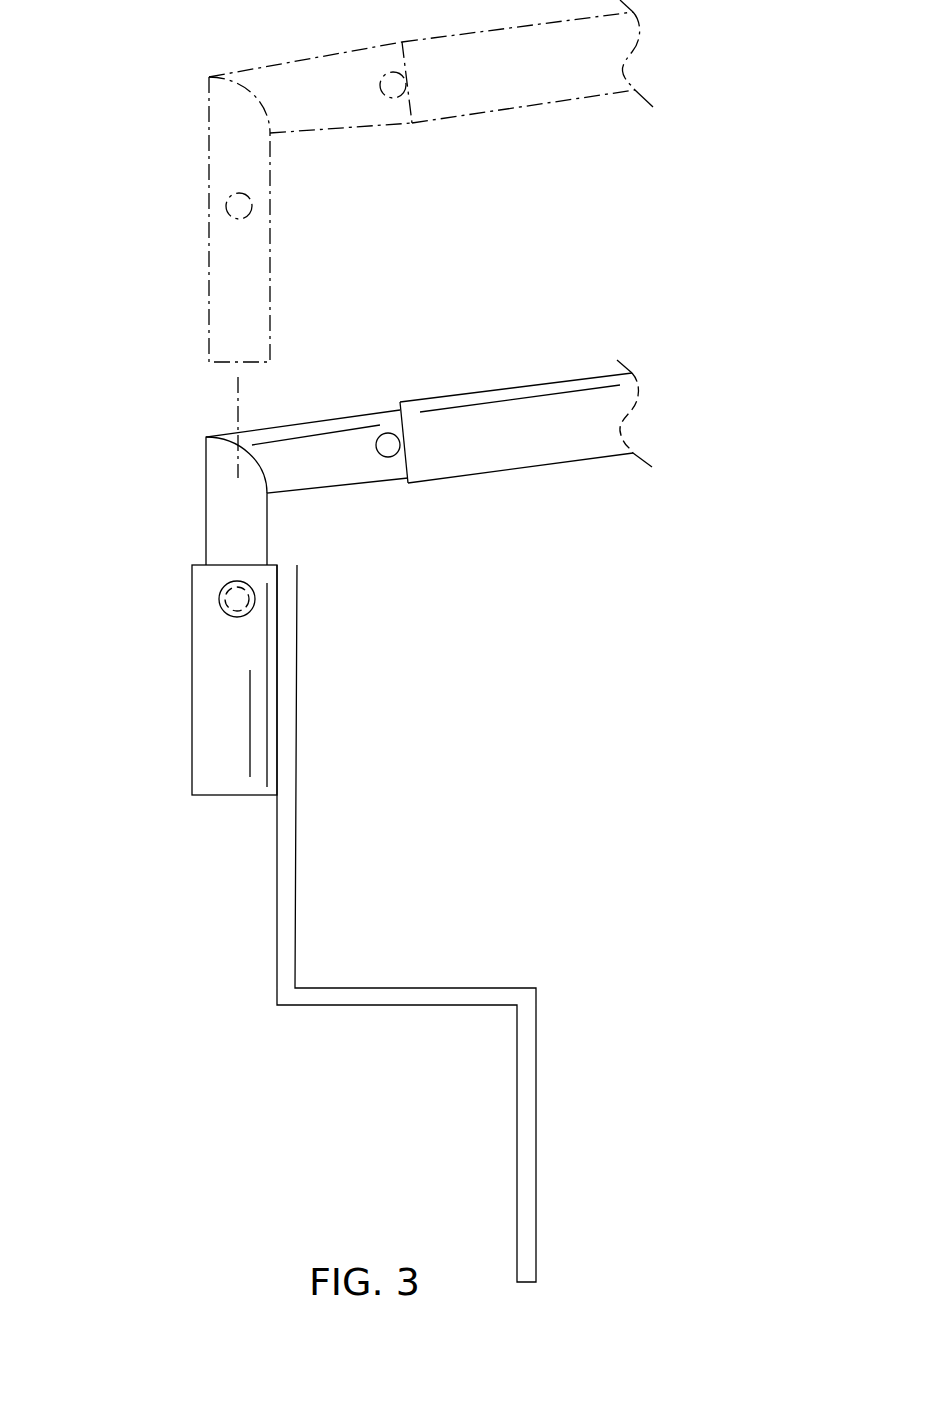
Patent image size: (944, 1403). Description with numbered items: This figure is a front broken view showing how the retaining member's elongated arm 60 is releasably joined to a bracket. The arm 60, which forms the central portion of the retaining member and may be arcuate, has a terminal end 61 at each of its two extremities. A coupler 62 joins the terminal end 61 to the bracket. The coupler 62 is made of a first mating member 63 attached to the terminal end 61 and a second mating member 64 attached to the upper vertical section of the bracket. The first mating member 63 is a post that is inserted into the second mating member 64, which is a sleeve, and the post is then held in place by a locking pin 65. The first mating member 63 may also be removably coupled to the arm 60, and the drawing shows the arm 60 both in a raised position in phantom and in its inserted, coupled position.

The elongated arm 60 is at (528, 390).
The terminal end 61 is at (400, 402).
The coupler 62 is at (158, 680).
The first mating member 63 is at (222, 508).
The second mating member 64 is at (205, 728).
The locking pin 65 is at (235, 600).